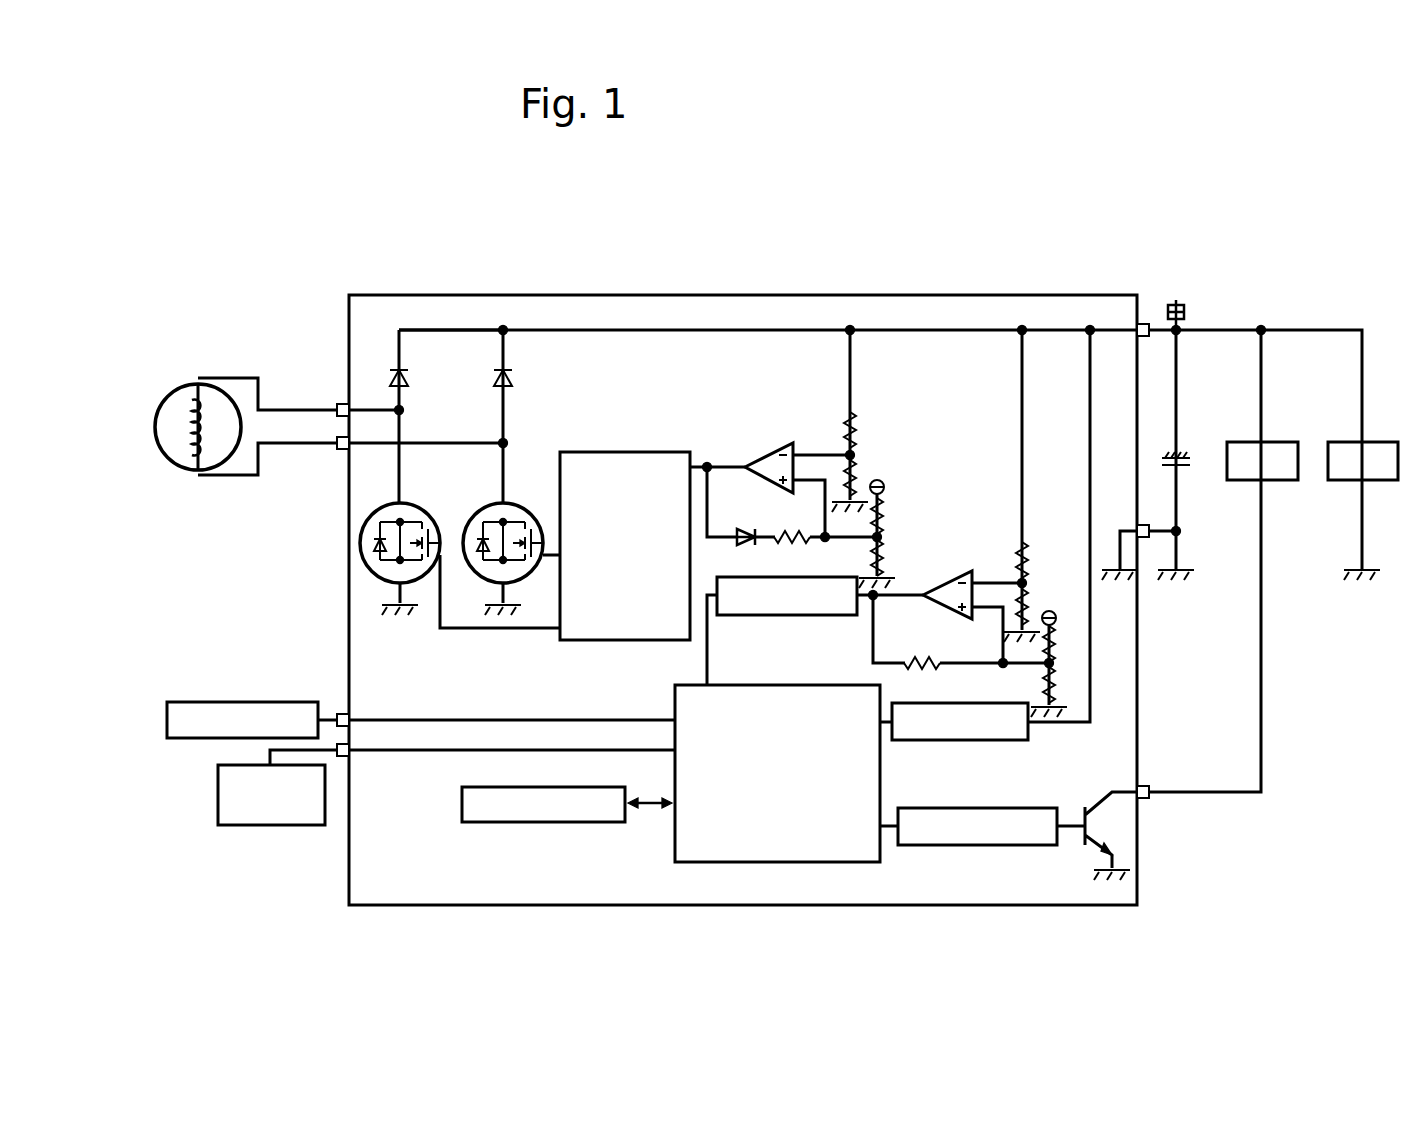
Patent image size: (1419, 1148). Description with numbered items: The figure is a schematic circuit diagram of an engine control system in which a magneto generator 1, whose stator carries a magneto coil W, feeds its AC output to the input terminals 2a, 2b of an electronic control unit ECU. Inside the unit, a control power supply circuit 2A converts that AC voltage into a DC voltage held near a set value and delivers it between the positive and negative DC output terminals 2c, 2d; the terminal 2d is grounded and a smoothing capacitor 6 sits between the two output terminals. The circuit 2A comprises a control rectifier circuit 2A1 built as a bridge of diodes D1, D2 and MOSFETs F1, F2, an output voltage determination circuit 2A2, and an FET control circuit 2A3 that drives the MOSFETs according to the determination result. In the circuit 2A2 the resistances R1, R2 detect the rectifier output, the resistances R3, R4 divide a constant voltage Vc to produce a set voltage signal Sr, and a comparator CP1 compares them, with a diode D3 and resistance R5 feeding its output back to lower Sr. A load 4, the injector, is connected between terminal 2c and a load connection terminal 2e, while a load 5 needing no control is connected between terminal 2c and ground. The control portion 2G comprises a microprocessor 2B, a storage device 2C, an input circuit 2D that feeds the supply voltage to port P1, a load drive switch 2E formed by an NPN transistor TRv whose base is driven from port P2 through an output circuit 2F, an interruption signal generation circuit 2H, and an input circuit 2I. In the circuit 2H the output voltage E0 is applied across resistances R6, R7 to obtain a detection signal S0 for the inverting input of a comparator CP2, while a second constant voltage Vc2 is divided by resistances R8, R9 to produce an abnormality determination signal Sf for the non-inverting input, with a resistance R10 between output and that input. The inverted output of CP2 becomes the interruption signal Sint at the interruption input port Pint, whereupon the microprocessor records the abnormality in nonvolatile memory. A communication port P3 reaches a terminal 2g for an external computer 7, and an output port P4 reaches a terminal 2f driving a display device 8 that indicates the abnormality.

The magneto generator 1 is at (220, 412).
The magneto coil W is at (190, 416).
The electronic control unit ECU is at (743, 600).
The input terminal 2a is at (341, 404).
The input terminal 2b is at (341, 450).
The positive DC output terminal 2c is at (1147, 322).
The negative DC output terminal 2d is at (1146, 540).
The load connection terminal 2e is at (1152, 798).
The display device connection terminal 2f is at (338, 716).
The terminal 2g is at (341, 760).
The control power supply circuit 2A is at (827, 262).
The control rectifier circuit 2A1 is at (515, 328).
The output voltage determination circuit 2A2 is at (800, 416).
The FET control circuit 2A3 is at (629, 448).
The microprocessor 2B is at (777, 792).
The storage device 2C is at (473, 825).
The input circuit 2D is at (1027, 741).
The load drive switch 2E is at (1140, 805).
The output circuit 2F is at (1050, 847).
The control portion 2G is at (665, 705).
The interruption signal generation circuit 2H is at (1030, 578).
The input circuit 2I is at (790, 618).
The diode D1 is at (407, 379).
The diode D2 is at (509, 379).
The diode D3 is at (748, 545).
The MOSFET F1 is at (412, 512).
The MOSFET F2 is at (512, 506).
The comparator CP1 is at (762, 460).
The comparator CP2 is at (935, 602).
The resistance R1 is at (858, 430).
The resistance R2 is at (858, 478).
The resistance R3 is at (885, 526).
The resistance R4 is at (885, 560).
The resistance R5 is at (792, 534).
The resistance R6 is at (1029, 560).
The resistance R7 is at (1030, 602).
The resistance R8 is at (1058, 652).
The resistance R9 is at (1058, 681).
The resistance R10 is at (873, 662).
The output voltage of constant voltage power supply circuit Vc is at (893, 488).
The reference voltage Vc2 is at (1065, 619).
The set voltage signal Sr is at (866, 527).
The voltage detection signal S0 is at (1001, 574).
The abnormality determination signal Sf is at (989, 623).
The interruption signal Sint is at (675, 664).
The interruption input port Pint is at (699, 700).
The port P1 is at (849, 724).
The port P2 is at (855, 828).
The communication port P3 is at (692, 756).
The output port P4 is at (692, 724).
The NPN transistor TRv is at (1098, 812).
The output voltage of control power supply circuit E0 is at (1178, 303).
The load 4 is at (1230, 444).
The load 5 is at (1333, 444).
The smoothing capacitor 6 is at (1163, 462).
The external computer 7 is at (233, 827).
The display device 8 is at (186, 701).